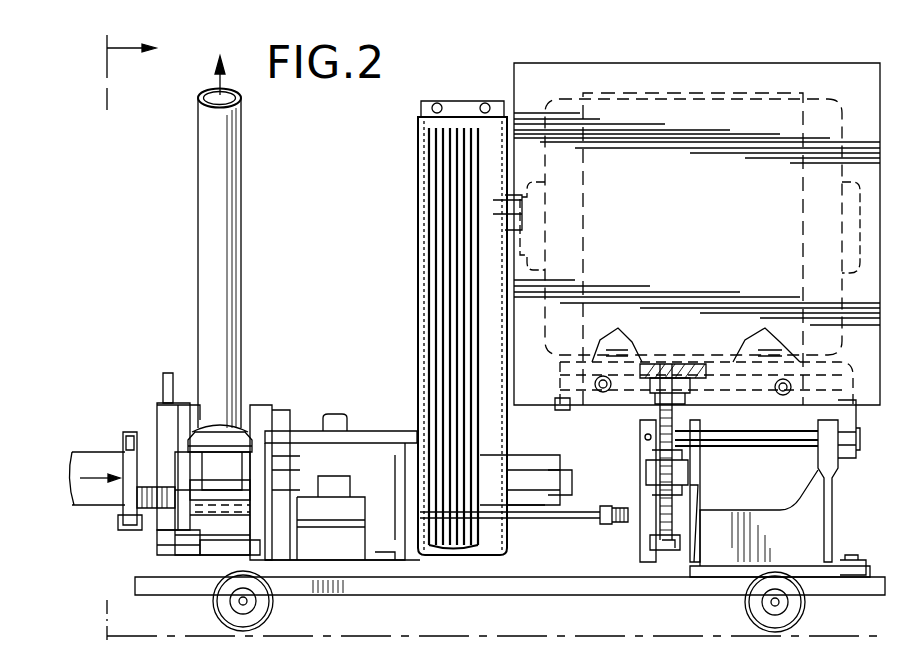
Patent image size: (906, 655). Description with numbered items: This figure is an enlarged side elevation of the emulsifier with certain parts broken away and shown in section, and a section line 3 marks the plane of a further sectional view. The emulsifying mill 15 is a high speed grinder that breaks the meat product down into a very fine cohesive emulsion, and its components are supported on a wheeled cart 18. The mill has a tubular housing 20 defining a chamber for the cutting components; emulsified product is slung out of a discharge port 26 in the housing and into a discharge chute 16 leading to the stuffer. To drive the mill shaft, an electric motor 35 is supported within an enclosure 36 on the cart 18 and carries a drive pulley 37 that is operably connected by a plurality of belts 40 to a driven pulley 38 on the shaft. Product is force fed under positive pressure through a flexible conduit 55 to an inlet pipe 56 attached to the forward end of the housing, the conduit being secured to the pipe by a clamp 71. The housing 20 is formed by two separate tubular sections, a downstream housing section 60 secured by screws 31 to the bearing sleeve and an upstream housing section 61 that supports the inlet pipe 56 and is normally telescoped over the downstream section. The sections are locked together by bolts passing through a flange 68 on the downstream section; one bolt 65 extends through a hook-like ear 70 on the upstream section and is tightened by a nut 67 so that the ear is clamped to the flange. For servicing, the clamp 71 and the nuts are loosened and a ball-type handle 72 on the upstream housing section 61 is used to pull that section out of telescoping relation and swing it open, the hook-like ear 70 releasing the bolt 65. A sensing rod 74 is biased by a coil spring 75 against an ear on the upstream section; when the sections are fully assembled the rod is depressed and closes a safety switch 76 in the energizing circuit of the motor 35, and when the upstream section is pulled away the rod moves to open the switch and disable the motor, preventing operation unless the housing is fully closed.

The section line 3 is at (118, 338).
The emulsifying mill 15 is at (322, 422).
The discharge chute 16 is at (207, 178).
The wheeled cart 18 is at (366, 592).
The tubular housing 20 is at (248, 532).
The discharge port 26 is at (232, 472).
The screws 31 is at (393, 442).
The electric motor 35 is at (656, 92).
The enclosure 36 is at (526, 82).
The drive pulley 37 is at (433, 184).
The driven pulley 38 is at (484, 446).
The belts 40 is at (440, 290).
The flexible conduit 55 is at (101, 452).
The inlet pipe 56 is at (170, 415).
The downstream housing section 60 is at (212, 548).
The upstream housing section 61 is at (164, 541).
The bolt 65 is at (122, 518).
The nut 67 is at (166, 508).
The flange 68 is at (266, 404).
The hook-like ear 70 is at (190, 492).
The clamp 71 is at (126, 450).
The ball-type handle 72 is at (172, 372).
The sensing rod 74 is at (560, 522).
The coil spring 75 is at (636, 515).
The safety switch 76 is at (655, 545).